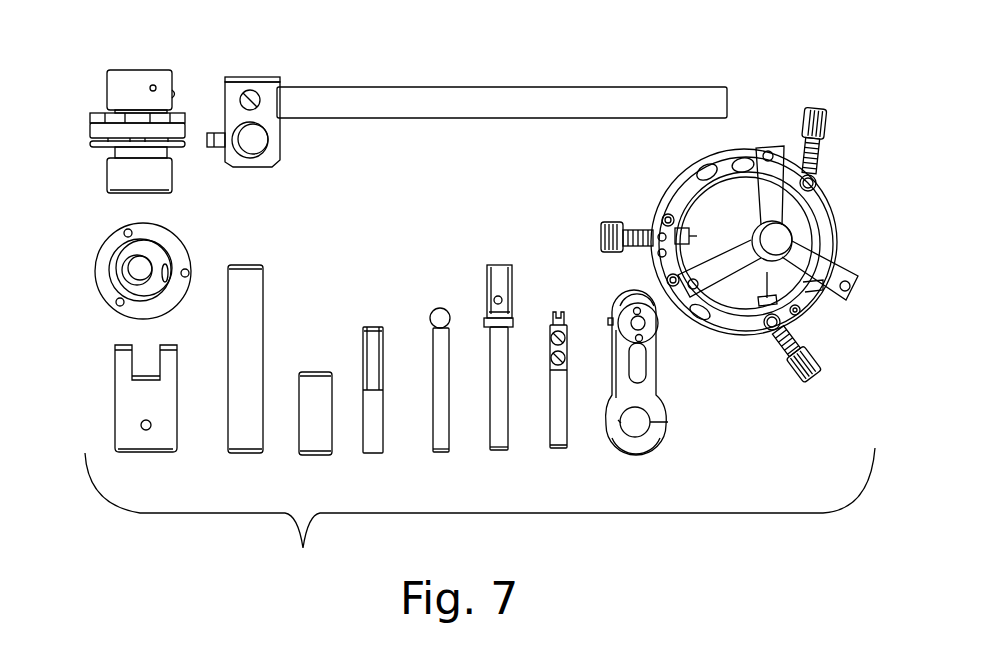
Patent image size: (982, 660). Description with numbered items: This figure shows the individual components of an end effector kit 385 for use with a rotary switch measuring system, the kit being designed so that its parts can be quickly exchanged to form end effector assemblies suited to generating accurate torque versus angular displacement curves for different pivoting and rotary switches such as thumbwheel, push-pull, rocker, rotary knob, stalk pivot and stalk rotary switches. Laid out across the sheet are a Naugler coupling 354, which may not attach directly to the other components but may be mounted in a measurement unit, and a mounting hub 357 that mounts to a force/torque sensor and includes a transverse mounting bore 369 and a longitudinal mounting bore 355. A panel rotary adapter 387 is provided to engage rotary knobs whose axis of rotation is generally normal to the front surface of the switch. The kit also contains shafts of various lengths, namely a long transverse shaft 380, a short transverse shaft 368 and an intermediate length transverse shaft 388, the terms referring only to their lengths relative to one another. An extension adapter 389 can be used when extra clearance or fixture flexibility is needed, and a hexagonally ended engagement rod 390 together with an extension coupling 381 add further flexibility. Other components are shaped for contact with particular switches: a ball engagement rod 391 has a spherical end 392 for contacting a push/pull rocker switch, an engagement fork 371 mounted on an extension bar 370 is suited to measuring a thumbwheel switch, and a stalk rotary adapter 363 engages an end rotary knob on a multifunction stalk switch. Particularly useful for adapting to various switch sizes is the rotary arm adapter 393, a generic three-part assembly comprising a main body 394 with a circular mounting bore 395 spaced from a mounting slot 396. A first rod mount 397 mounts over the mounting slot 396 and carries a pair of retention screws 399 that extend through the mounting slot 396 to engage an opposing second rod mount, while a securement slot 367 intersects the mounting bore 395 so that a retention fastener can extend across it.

The Naugler coupling 354 is at (107, 82).
The extension coupling 381 is at (250, 77).
The long transverse shaft 380 is at (410, 87).
The stalk rotary adapter 363 is at (772, 148).
The mounting hub 357 is at (105, 243).
The transverse mounting bore 369 is at (165, 266).
The longitudinal mounting bore 355 is at (127, 272).
The panel rotary adapter 387 is at (115, 398).
The intermediate length transverse shaft 388 is at (245, 265).
The short transverse shaft 368 is at (314, 372).
The hexagonally ended engagement rod 390 is at (373, 326).
The spherical end 392 is at (432, 316).
The ball engagement rod 391 is at (432, 443).
The extension adapter 389 is at (485, 276).
The extension bar 370 is at (552, 443).
The engagement fork 371 is at (552, 316).
The first rod mount 397 is at (620, 302).
The retention screws 399 is at (653, 334).
The mounting slot 396 is at (647, 362).
The securement slot 367 is at (665, 434).
The circular mounting bore 395 is at (645, 443).
The rotary arm adapter 393 is at (625, 452).
The main body 394 is at (607, 418).
The end effector kit 385 is at (480, 516).